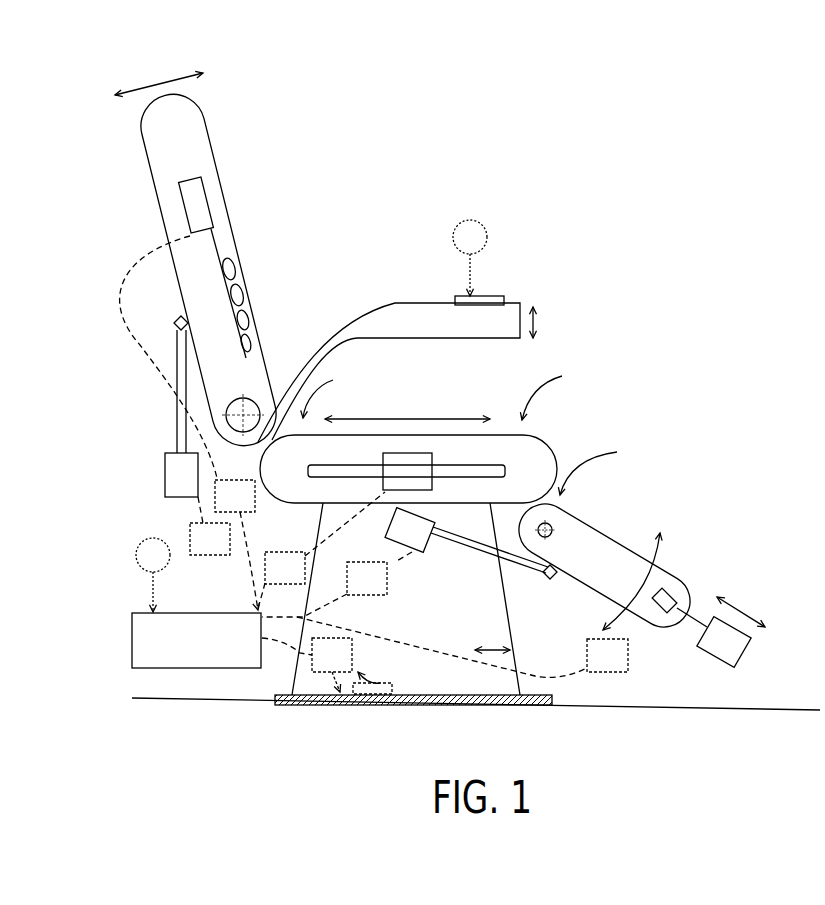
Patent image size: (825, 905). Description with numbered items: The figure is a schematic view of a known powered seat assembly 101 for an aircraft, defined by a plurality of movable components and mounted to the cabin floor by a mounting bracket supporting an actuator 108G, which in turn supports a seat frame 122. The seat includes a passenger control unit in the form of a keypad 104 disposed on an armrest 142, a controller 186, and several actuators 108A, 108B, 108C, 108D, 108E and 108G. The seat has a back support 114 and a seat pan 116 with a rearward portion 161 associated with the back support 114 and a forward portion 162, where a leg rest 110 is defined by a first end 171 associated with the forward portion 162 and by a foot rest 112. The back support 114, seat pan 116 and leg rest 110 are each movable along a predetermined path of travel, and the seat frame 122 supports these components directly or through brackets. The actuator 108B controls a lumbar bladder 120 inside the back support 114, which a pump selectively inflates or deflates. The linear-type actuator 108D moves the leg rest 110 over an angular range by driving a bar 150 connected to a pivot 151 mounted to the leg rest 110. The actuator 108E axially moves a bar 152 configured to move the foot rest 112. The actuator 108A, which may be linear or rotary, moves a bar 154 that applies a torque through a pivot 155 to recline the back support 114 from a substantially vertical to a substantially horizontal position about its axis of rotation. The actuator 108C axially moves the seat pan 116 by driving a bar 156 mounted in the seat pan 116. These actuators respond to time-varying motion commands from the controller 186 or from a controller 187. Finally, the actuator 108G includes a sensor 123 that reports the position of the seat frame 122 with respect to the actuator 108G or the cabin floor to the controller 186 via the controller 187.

The powered seat assembly 101 is at (247, 87).
The keypad 104 is at (486, 300).
The actuator 108A is at (165, 474).
The actuator 108B is at (207, 202).
The actuator 108C is at (400, 455).
The actuator 108D is at (412, 547).
The actuator 108E is at (676, 597).
The actuator 108G is at (531, 706).
The leg rest 110 is at (582, 522).
The foot rest 112 is at (744, 653).
The back support 114 is at (152, 178).
The seat pan 116 is at (532, 440).
The lumbar bladder 120 is at (240, 290).
The seat frame 122 is at (522, 660).
The sensor 123 is at (393, 689).
The armrest 142 is at (397, 303).
The bar 150 is at (487, 566).
The pivot 151 is at (548, 580).
The bar 152 is at (689, 626).
The bar 154 is at (176, 422).
The pivot 155 is at (175, 323).
The bar 156 is at (308, 470).
The rearward portion 161 is at (333, 396).
The forward portion 162 is at (557, 393).
The first end 171 is at (601, 468).
The controller 186 is at (132, 632).
The controller 187 is at (285, 551).